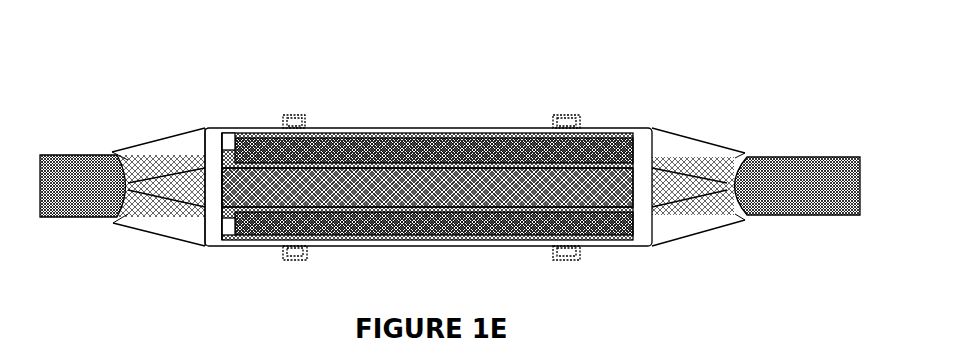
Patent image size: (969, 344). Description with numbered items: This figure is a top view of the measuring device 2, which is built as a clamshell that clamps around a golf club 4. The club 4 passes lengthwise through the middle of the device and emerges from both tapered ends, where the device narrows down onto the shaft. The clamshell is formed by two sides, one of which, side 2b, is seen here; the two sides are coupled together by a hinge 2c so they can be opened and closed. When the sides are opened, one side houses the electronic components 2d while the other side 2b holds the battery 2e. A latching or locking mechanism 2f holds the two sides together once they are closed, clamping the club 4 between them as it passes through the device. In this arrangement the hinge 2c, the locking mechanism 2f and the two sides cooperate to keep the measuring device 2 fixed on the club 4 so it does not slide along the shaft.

The measuring device 2 is at (182, 68).
The side 2b is at (242, 128).
The hinge 2c is at (296, 118).
The electronic components 2d is at (373, 242).
The battery 2e is at (657, 138).
The latching or locking mechanism 2f is at (283, 258).
The club 4 is at (96, 150).